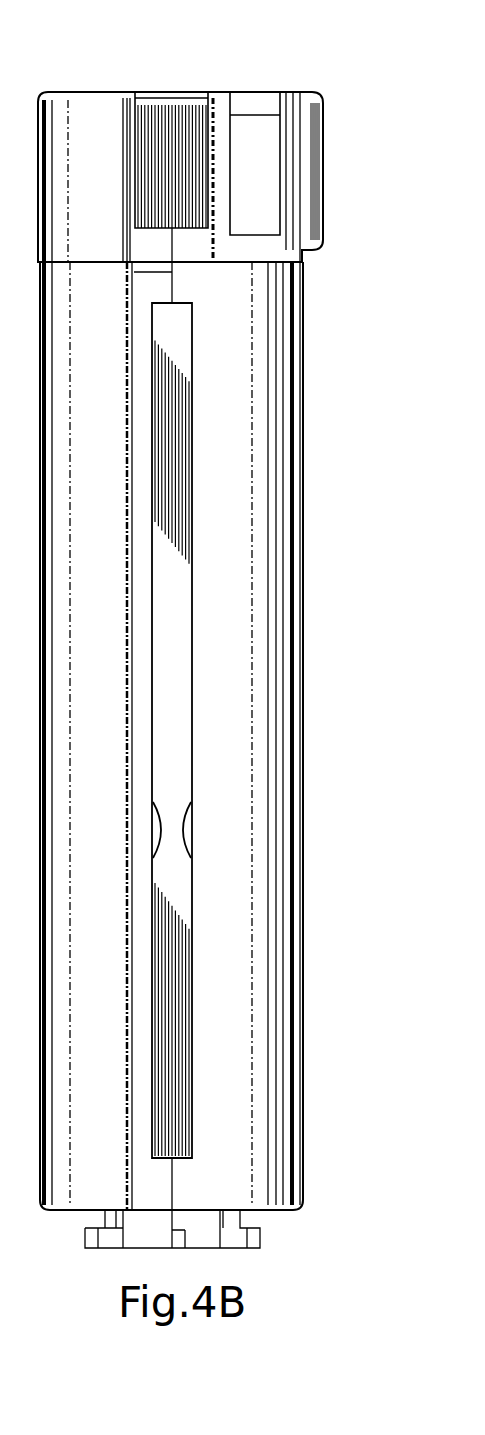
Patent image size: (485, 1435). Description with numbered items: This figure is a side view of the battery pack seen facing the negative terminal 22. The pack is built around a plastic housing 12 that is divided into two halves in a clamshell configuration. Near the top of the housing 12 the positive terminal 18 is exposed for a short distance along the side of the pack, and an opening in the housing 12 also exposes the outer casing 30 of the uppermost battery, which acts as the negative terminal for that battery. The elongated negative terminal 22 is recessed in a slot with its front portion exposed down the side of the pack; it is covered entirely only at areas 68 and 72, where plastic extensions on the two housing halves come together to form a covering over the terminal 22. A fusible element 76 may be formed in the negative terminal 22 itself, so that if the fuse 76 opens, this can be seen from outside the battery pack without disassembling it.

The plastic housing 12 is at (314, 390).
The positive terminal 18 is at (322, 148).
The negative terminal 22 is at (182, 125).
The outer casing of uppermost battery 30 is at (252, 133).
The covered area 68 is at (134, 272).
The covered area 72 is at (172, 1192).
The fusible element 76 is at (170, 842).